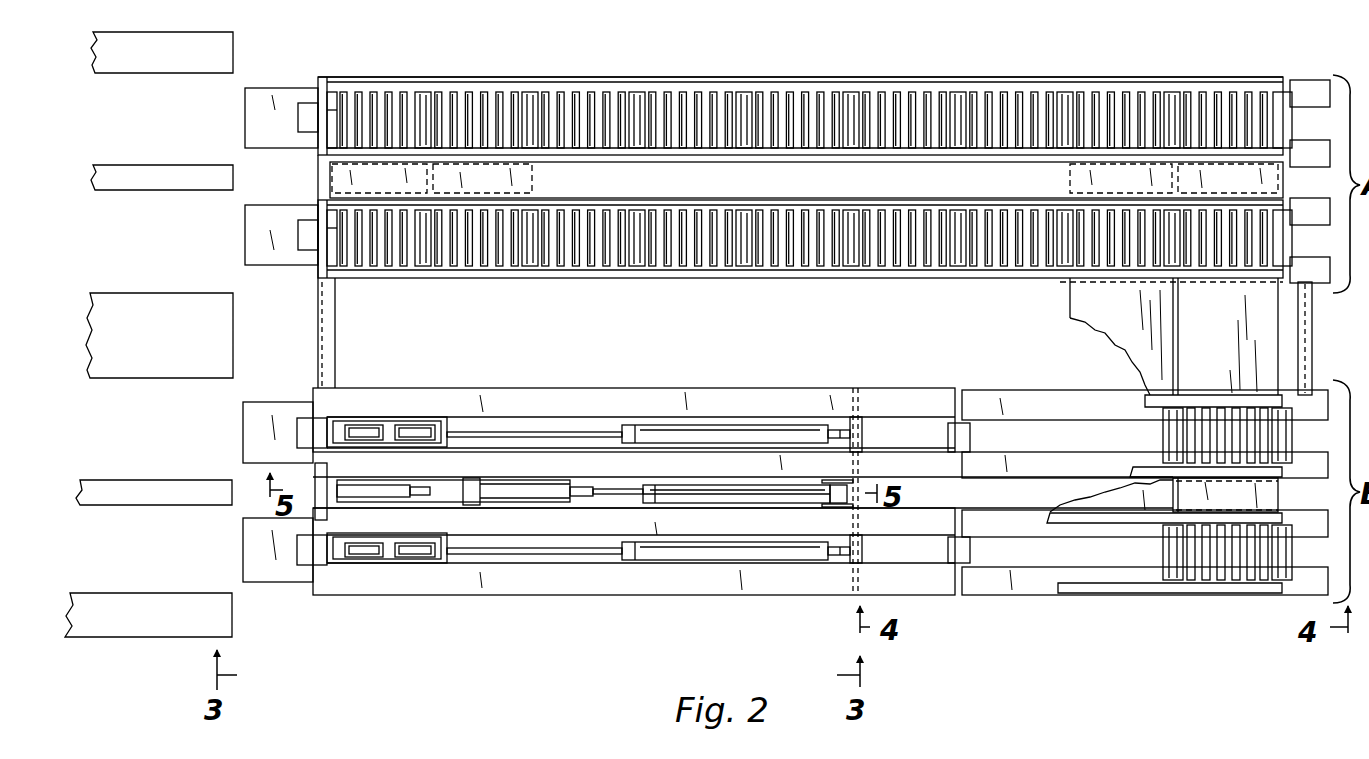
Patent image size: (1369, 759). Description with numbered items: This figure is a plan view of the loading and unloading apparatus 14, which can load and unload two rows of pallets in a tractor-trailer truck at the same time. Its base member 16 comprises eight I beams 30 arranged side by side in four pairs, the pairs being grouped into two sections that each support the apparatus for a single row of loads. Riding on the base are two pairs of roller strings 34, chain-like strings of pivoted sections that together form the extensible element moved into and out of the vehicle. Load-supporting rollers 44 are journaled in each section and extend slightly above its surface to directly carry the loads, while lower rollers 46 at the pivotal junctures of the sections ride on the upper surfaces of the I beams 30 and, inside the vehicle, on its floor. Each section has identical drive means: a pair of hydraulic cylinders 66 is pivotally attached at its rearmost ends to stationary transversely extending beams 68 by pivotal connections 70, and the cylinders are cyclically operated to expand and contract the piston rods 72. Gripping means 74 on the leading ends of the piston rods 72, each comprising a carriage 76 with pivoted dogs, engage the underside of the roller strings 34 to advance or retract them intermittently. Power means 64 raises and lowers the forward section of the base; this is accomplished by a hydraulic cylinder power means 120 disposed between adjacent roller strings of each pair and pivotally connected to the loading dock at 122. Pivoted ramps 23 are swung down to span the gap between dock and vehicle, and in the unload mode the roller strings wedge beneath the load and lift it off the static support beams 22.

The loading and unloading apparatus 14 is at (684, 77).
The base member 16 is at (1283, 500).
The static support beams 22 is at (184, 346).
The pivoted ramps 23 is at (277, 94).
The I beams 30 is at (522, 400).
The roller strings 34 is at (1142, 77).
The load-supporting rollers 44 is at (930, 92).
The lower rollers 46 is at (852, 92).
The power means 64 is at (675, 485).
The hydraulic cylinders 66 is at (695, 425).
The stationary transversely extending beams 68 is at (865, 440).
The pivotal connections 70 is at (838, 430).
The piston rods 72 is at (578, 432).
The gripping means 74 is at (417, 417).
The carriage 76 is at (365, 425).
The hydraulic cylinder power means 120 is at (697, 503).
The pivotal connection to loading dock 122 is at (838, 510).